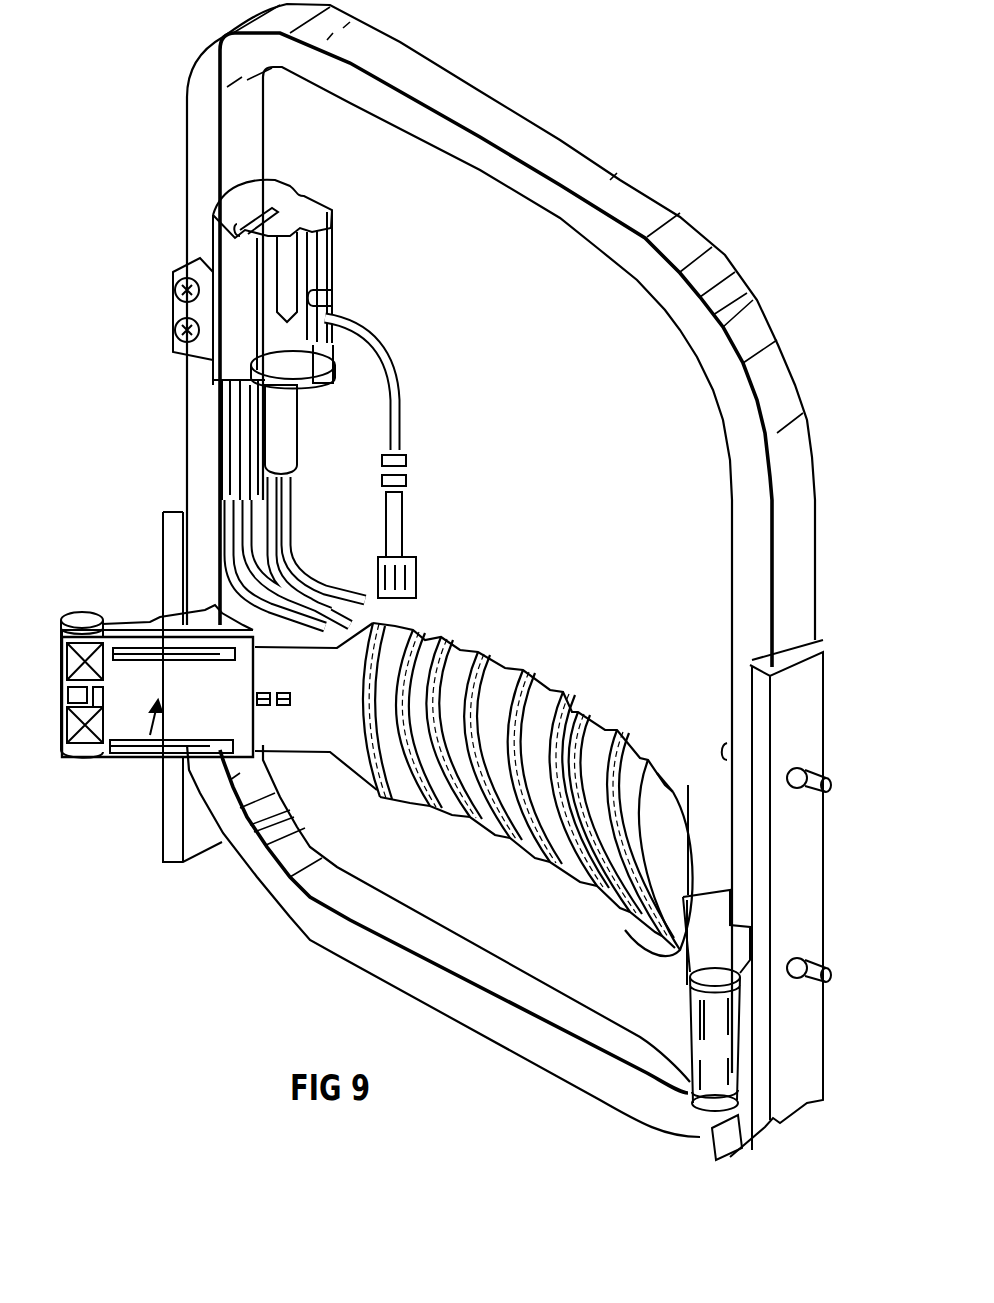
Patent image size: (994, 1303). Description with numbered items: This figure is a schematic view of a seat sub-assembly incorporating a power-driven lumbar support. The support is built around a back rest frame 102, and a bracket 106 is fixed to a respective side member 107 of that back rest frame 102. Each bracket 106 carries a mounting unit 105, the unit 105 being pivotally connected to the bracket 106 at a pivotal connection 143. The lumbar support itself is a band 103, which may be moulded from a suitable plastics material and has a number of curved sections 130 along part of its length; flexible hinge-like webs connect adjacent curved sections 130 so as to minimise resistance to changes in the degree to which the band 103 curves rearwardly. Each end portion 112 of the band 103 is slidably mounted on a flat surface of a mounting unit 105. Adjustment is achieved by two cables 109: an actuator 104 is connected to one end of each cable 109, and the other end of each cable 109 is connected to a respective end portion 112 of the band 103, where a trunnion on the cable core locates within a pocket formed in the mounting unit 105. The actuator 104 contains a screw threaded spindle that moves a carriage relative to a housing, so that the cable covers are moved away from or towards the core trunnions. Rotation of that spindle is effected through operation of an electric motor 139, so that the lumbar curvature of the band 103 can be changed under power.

The back rest frame 102 is at (678, 320).
The band 103 is at (511, 657).
The actuator 104 is at (296, 428).
The mounting unit 105 is at (150, 765).
The bracket 106 is at (136, 618).
The side member 107 is at (193, 463).
The cables 109 is at (300, 624).
The end portion of the band 112 is at (297, 735).
The curved sections 130 is at (453, 623).
The electric motor 139 is at (330, 247).
The pivotal connection 143 is at (78, 616).